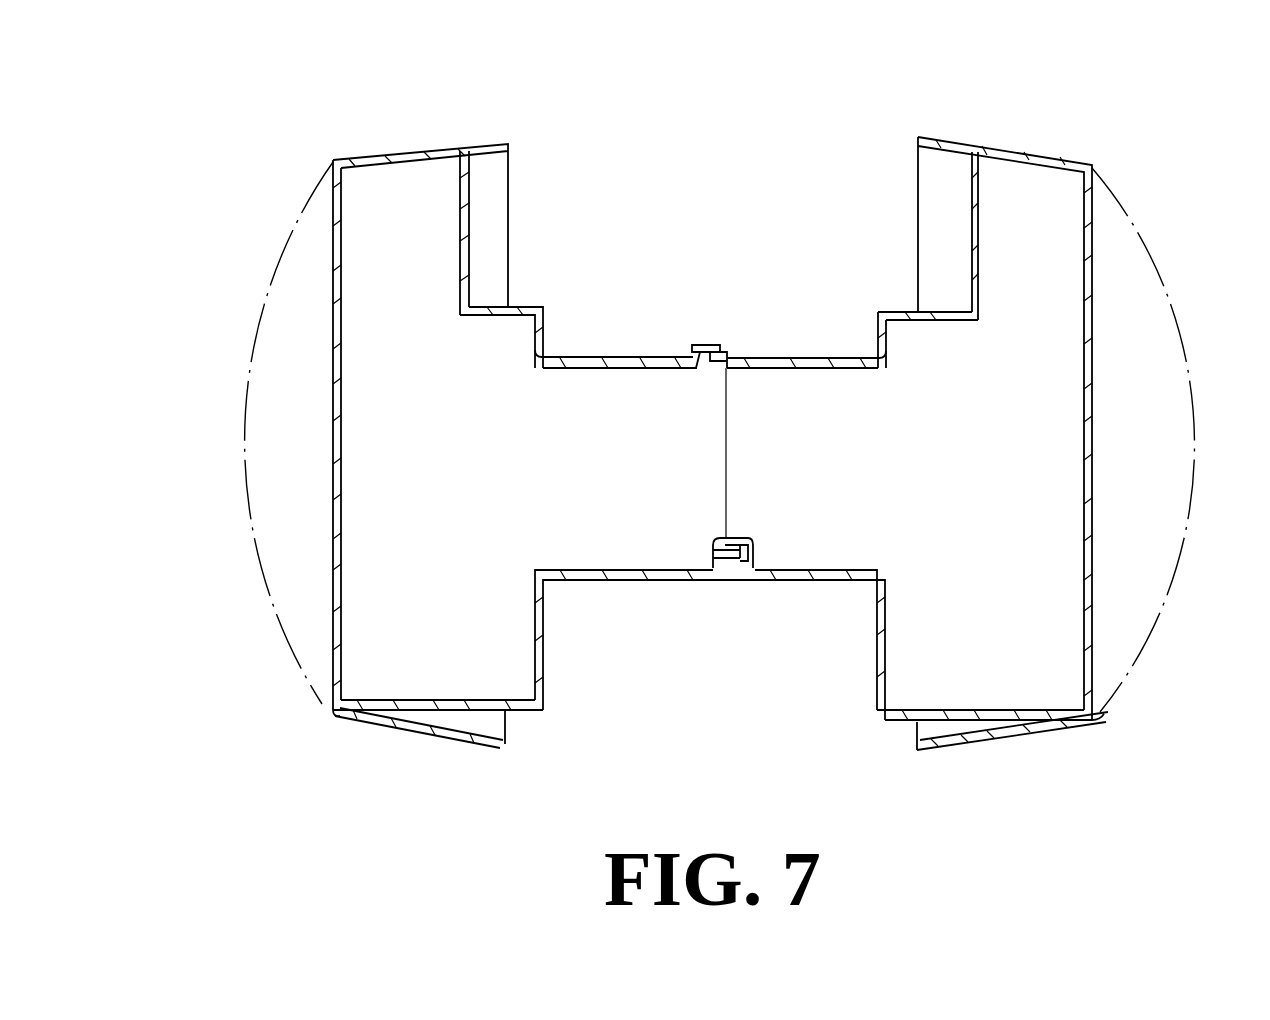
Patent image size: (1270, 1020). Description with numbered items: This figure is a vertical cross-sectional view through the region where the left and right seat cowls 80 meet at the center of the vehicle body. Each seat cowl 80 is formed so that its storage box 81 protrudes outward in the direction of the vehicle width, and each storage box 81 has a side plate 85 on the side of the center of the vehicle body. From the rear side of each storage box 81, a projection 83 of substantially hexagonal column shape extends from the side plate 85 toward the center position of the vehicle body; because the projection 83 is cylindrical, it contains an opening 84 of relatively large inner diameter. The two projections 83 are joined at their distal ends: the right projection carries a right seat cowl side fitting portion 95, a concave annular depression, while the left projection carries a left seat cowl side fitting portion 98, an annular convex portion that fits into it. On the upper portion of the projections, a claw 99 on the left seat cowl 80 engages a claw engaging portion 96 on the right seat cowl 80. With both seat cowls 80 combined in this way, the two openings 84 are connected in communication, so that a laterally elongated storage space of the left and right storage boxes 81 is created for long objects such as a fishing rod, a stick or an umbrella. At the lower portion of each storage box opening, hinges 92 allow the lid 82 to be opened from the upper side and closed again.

The seat cowl 80 is at (433, 147).
The storage box 81 is at (380, 697).
The lid 82 is at (266, 303).
The projection 83 is at (581, 355).
The opening 84 is at (567, 368).
The side plate 85 is at (462, 214).
The hinge 92 is at (323, 708).
The right seat cowl side fitting portion 95 is at (741, 538).
The claw engaging portion 96 is at (729, 344).
The left seat cowl side fitting portion 98 is at (720, 538).
The claw 99 is at (700, 344).